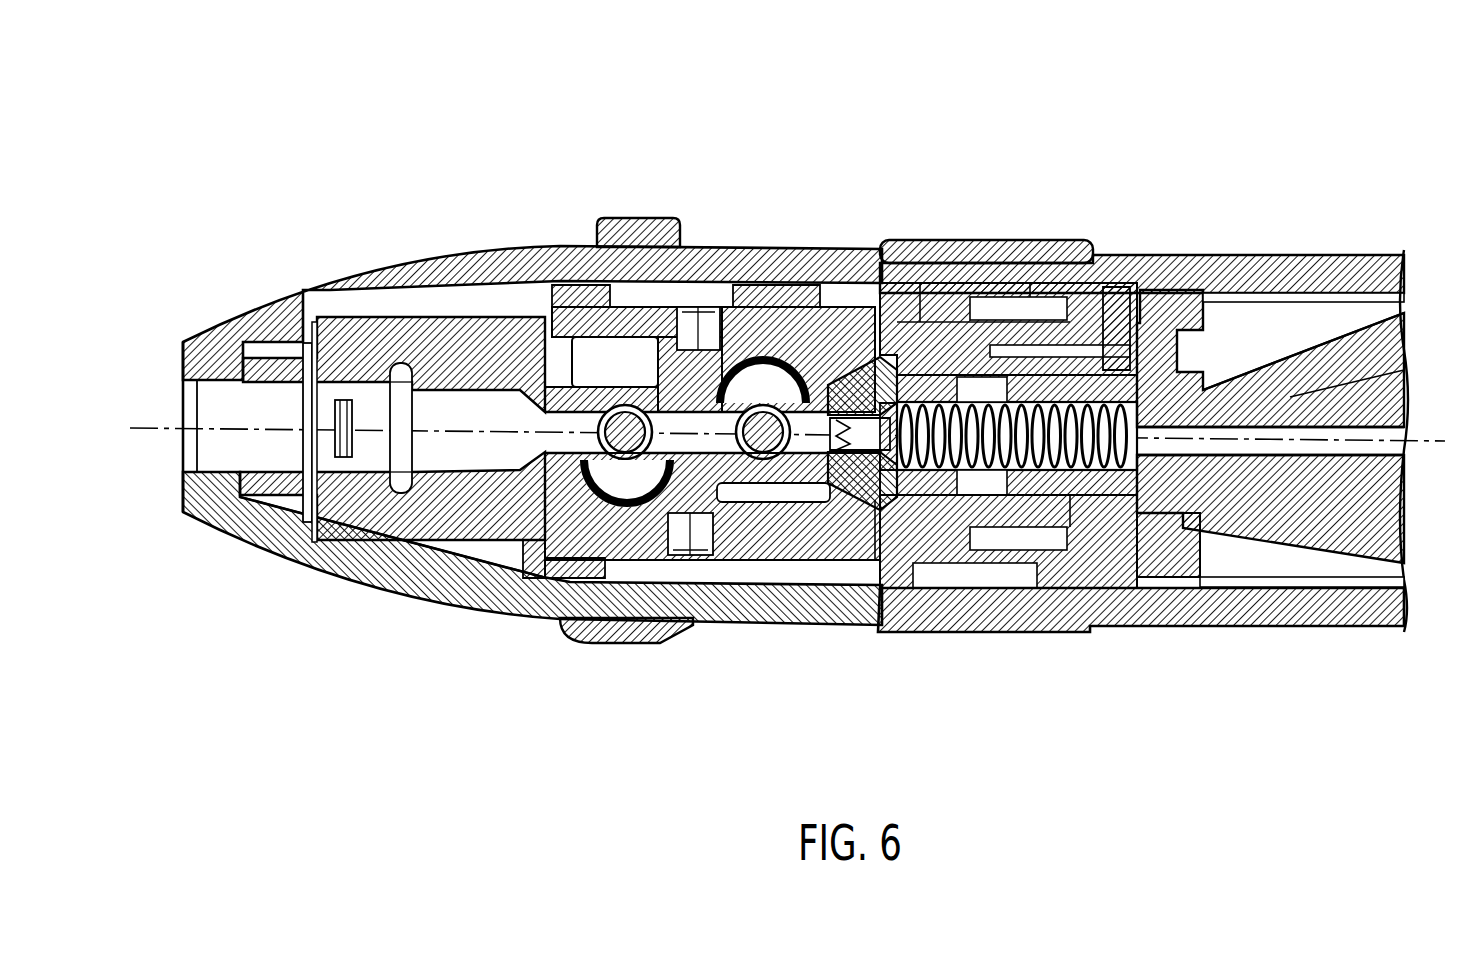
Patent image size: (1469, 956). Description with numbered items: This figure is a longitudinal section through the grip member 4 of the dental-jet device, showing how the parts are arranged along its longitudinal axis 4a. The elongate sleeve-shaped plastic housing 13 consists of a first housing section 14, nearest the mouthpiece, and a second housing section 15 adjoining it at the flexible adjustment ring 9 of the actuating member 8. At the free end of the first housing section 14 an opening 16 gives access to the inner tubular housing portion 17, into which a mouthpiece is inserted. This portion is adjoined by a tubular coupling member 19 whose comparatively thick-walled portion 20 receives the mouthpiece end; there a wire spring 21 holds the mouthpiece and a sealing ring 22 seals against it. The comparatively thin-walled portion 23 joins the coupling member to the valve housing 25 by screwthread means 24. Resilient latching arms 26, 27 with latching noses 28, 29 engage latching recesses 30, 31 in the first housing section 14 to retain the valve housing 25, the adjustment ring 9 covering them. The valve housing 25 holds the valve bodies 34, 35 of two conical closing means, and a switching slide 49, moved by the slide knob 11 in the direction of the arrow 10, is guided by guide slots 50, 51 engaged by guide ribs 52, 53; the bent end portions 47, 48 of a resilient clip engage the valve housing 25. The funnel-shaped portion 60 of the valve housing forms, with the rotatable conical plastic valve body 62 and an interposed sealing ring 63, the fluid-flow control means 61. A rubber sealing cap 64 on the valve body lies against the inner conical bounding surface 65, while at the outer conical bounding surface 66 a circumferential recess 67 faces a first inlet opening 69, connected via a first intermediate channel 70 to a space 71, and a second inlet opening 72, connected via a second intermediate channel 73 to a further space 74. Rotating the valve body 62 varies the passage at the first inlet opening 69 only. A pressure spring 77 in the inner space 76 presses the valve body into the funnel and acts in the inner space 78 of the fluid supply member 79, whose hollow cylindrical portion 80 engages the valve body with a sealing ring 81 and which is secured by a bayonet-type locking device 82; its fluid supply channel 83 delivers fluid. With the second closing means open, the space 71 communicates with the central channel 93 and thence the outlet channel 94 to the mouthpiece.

The grip member 4 is at (1268, 183).
The longitudinal axis 4a is at (1468, 442).
The actuating member 8 is at (1060, 238).
The adjustment ring 9 is at (1082, 632).
The arrow 10 is at (255, 178).
The slide knob 11 is at (672, 215).
The plastic housing 13 is at (207, 540).
The first housing section 14 is at (297, 553).
The second housing section 15 is at (1365, 630).
The opening 16 is at (183, 447).
The inner tubular housing portion 17 is at (273, 355).
The tubular coupling member 19 is at (545, 250).
The comparatively thick-walled portion 20 is at (400, 345).
The wire spring 21 is at (335, 415).
The sealing ring 22 is at (373, 455).
The comparatively thin-walled portion 23 is at (452, 325).
The screwthread means 24 is at (433, 500).
The valve housing 25 is at (848, 580).
The latching arm 26 is at (1070, 250).
The latching arm 27 is at (1033, 580).
The latching nose 28 is at (1023, 300).
The latching nose 29 is at (1017, 580).
The latching recess 30 is at (983, 395).
The latching recess 31 is at (980, 580).
The valve body 34 is at (600, 520).
The valve body 35 is at (740, 490).
The bent end portion 47 is at (700, 300).
The bent end portion 48 is at (660, 618).
The switching slide 49 is at (630, 280).
The guide slot 50 is at (566, 300).
The guide slot 51 is at (745, 555).
The guide rib 52 is at (698, 330).
The guide rib 53 is at (850, 560).
The funnel-shaped portion 60 is at (935, 570).
The fluid-flow control means 61 is at (905, 350).
The conical plastic valve body 62 is at (925, 350).
The sealing ring 63 is at (960, 330).
The rubber sealing cap 64 is at (923, 560).
The inner conical bounding surface 65 is at (808, 505).
The outer conical bounding surface 66 is at (953, 580).
The circumferential recess 67 is at (885, 375).
The first inlet opening 69 is at (835, 383).
The first intermediate channel 70 is at (800, 378).
The space 71 is at (755, 400).
The second inlet opening 72 is at (870, 570).
The second intermediate channel 73 is at (705, 555).
The further space 74 is at (625, 470).
The inner space 76 is at (975, 385).
The pressure spring 77 is at (1125, 560).
The inner space 78 is at (1133, 300).
The fluid supply member 79 is at (1262, 385).
The hollow cylindrical portion 80 is at (1100, 585).
The sealing ring 81 is at (1100, 300).
The bayonet-type locking device 82 is at (1238, 345).
The fluid supply channel 83 is at (1387, 435).
The central channel 93 is at (690, 425).
The outlet channel 94 is at (495, 458).